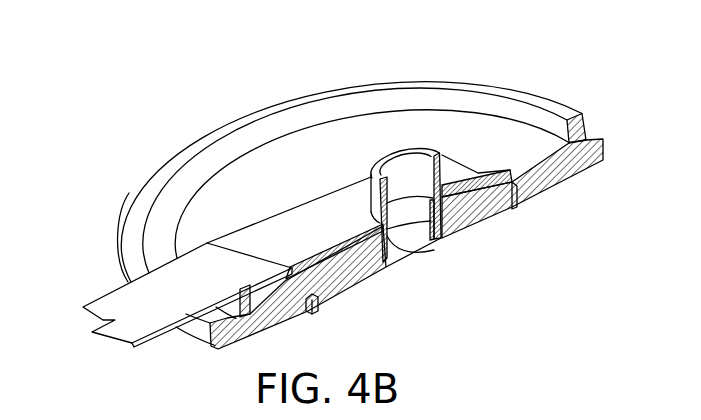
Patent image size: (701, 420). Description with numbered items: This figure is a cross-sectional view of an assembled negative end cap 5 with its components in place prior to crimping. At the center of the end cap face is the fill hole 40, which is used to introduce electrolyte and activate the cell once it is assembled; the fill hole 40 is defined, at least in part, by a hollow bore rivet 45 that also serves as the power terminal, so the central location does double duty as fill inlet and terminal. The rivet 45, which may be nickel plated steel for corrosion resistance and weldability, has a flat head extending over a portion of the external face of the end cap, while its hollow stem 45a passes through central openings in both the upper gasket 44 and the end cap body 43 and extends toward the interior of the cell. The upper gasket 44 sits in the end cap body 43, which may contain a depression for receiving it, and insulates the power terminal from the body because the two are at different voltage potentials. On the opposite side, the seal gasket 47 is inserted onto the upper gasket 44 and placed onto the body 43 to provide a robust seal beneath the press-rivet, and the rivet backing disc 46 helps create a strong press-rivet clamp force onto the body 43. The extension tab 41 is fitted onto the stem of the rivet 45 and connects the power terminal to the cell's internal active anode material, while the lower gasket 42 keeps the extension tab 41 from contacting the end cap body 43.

The negative end cap 5 is at (503, 49).
The fill hole 40 is at (400, 256).
The extension tab 41 is at (83, 304).
The lower gasket 42 is at (585, 116).
The end cap body 43 is at (584, 167).
The upper gasket 44 is at (518, 200).
The hollow bore rivet 45 is at (479, 228).
The stem 45a is at (377, 160).
The rivet backing disc 46 is at (342, 252).
The seal gasket 47 is at (480, 188).